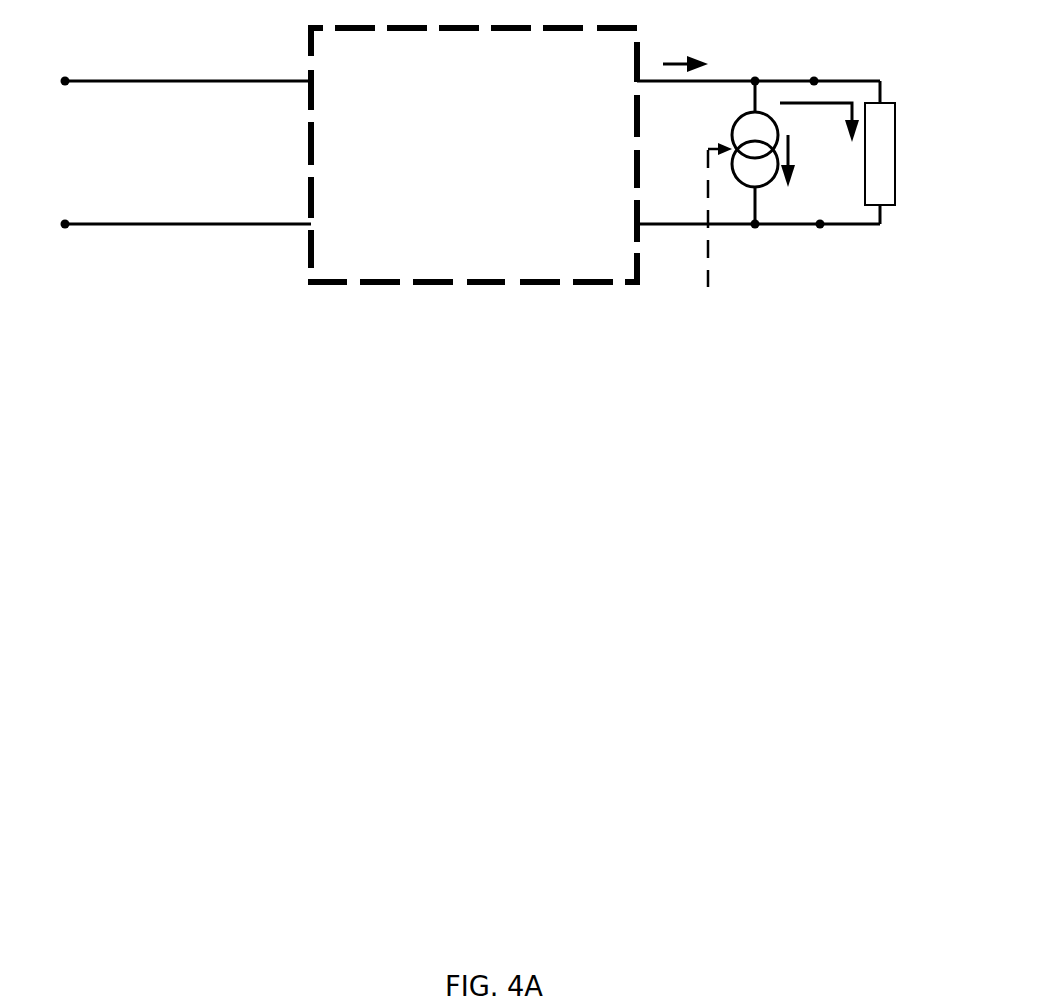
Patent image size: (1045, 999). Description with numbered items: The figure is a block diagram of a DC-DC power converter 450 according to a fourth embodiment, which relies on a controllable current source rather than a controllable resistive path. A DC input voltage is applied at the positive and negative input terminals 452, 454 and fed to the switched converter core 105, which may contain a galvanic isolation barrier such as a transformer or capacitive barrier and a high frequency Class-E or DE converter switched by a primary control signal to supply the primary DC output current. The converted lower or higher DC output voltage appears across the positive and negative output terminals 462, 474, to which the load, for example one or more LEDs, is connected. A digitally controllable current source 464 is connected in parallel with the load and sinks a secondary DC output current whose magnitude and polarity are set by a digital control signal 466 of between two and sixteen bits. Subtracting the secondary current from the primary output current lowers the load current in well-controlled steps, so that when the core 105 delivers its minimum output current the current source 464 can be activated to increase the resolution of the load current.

The DC-DC power converter 450 is at (262, 375).
The positive input terminal 452 is at (70, 75).
The negative input terminal 454 is at (70, 237).
The switched converter core 105 is at (360, 283).
The positive output terminal 462 is at (815, 78).
The digitally controllable current source 464 is at (738, 109).
The digital control signal 466 is at (710, 287).
The negative output terminal 474 is at (822, 229).